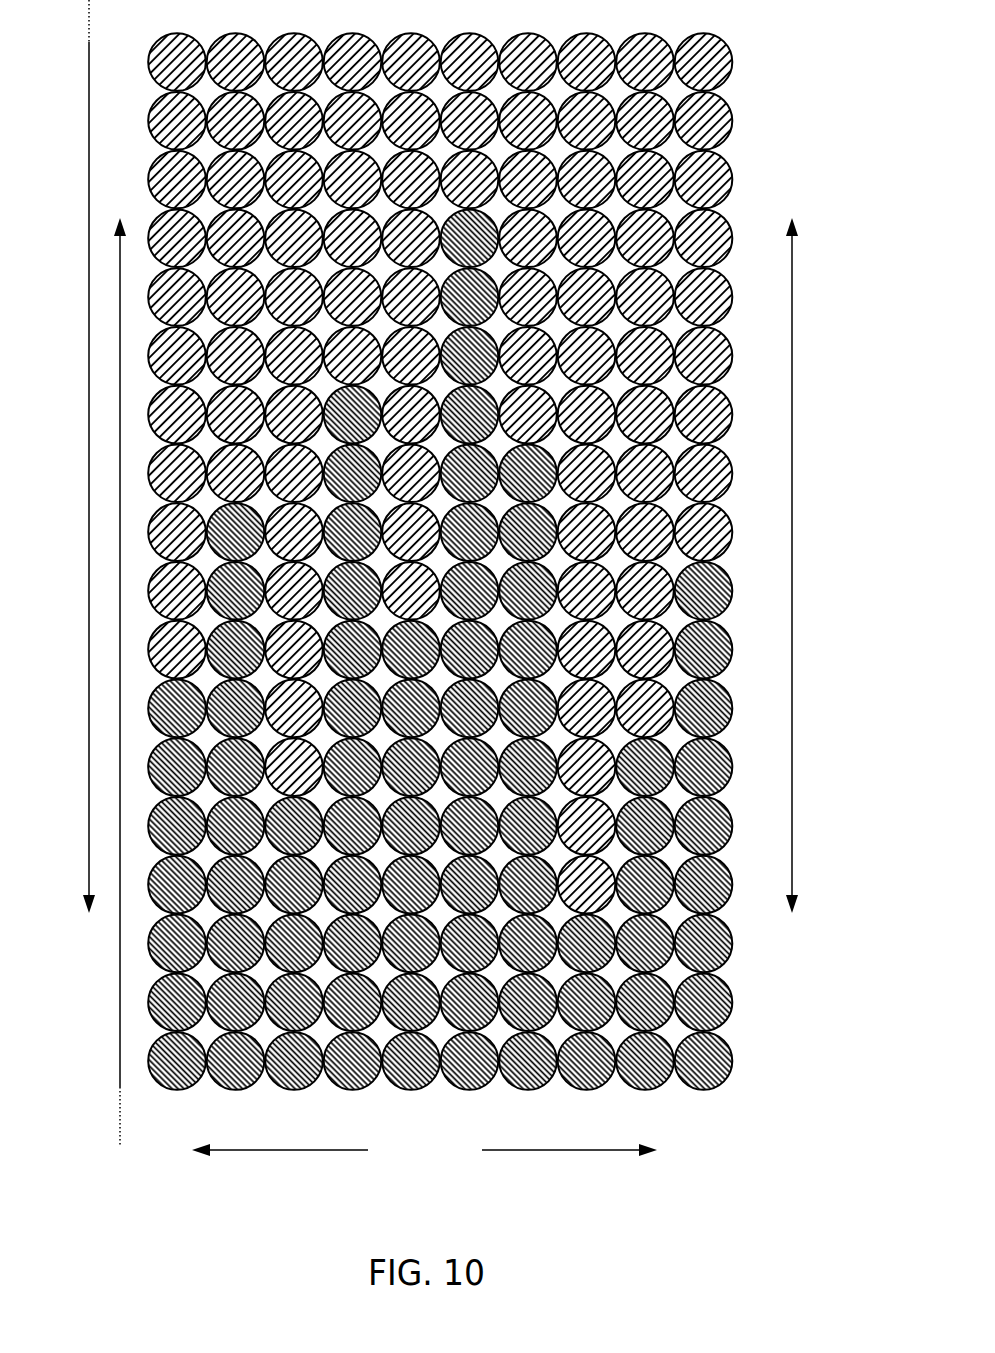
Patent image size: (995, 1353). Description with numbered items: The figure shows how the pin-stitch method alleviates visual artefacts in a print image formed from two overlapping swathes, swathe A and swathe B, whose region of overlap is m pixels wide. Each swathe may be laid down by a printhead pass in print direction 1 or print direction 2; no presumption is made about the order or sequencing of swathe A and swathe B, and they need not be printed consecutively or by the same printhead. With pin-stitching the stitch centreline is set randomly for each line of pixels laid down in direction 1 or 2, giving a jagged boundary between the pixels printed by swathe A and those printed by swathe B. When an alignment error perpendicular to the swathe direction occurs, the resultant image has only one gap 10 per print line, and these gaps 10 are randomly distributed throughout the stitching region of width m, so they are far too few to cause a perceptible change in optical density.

The gap 10 is at (496, 581).
The direction 1 is at (280, 1171).
The direction 2 is at (569, 1171).
The swathe A is at (85, 682).
The swathe B is at (91, 514).
The overlap width m is at (809, 565).